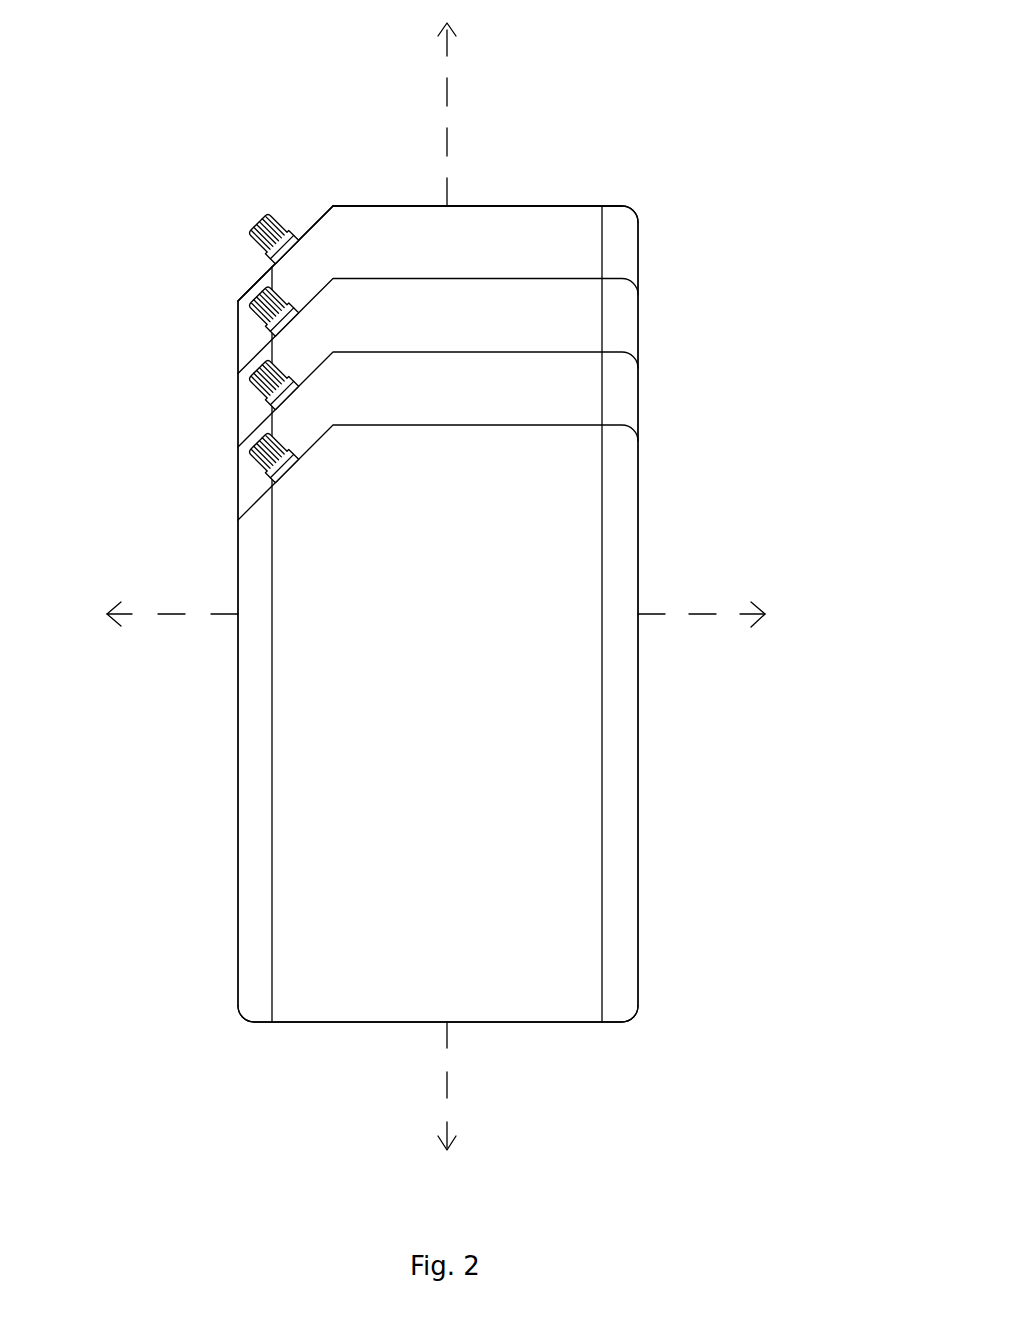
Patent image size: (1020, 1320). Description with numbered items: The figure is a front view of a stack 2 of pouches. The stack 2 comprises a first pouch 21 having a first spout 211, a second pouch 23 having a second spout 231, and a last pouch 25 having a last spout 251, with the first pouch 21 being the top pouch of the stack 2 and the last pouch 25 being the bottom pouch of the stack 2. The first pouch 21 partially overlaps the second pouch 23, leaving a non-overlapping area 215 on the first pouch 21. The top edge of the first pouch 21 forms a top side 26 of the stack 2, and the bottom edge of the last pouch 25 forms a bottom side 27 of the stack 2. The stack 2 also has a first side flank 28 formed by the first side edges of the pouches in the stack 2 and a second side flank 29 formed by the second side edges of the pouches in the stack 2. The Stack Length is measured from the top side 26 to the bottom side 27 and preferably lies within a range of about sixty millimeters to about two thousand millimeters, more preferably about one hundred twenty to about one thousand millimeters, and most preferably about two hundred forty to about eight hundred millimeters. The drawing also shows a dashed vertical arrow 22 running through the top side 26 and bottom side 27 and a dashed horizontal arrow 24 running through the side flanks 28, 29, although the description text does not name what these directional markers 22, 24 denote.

The stack 2 is at (708, 158).
The first pouch 21 is at (532, 232).
The first spout 211 is at (265, 225).
The non-overlapping area 215 is at (368, 235).
The longitudinal direction 22 is at (447, 80).
The second pouch 23 is at (505, 313).
The second spout 231 is at (262, 298).
The lateral direction 24 is at (175, 614).
The last pouch 25 is at (568, 665).
The last spout 251 is at (255, 442).
The top side 26 is at (463, 206).
The bottom side 27 is at (532, 1024).
The first side flank 28 is at (238, 815).
The second side flank 29 is at (639, 543).